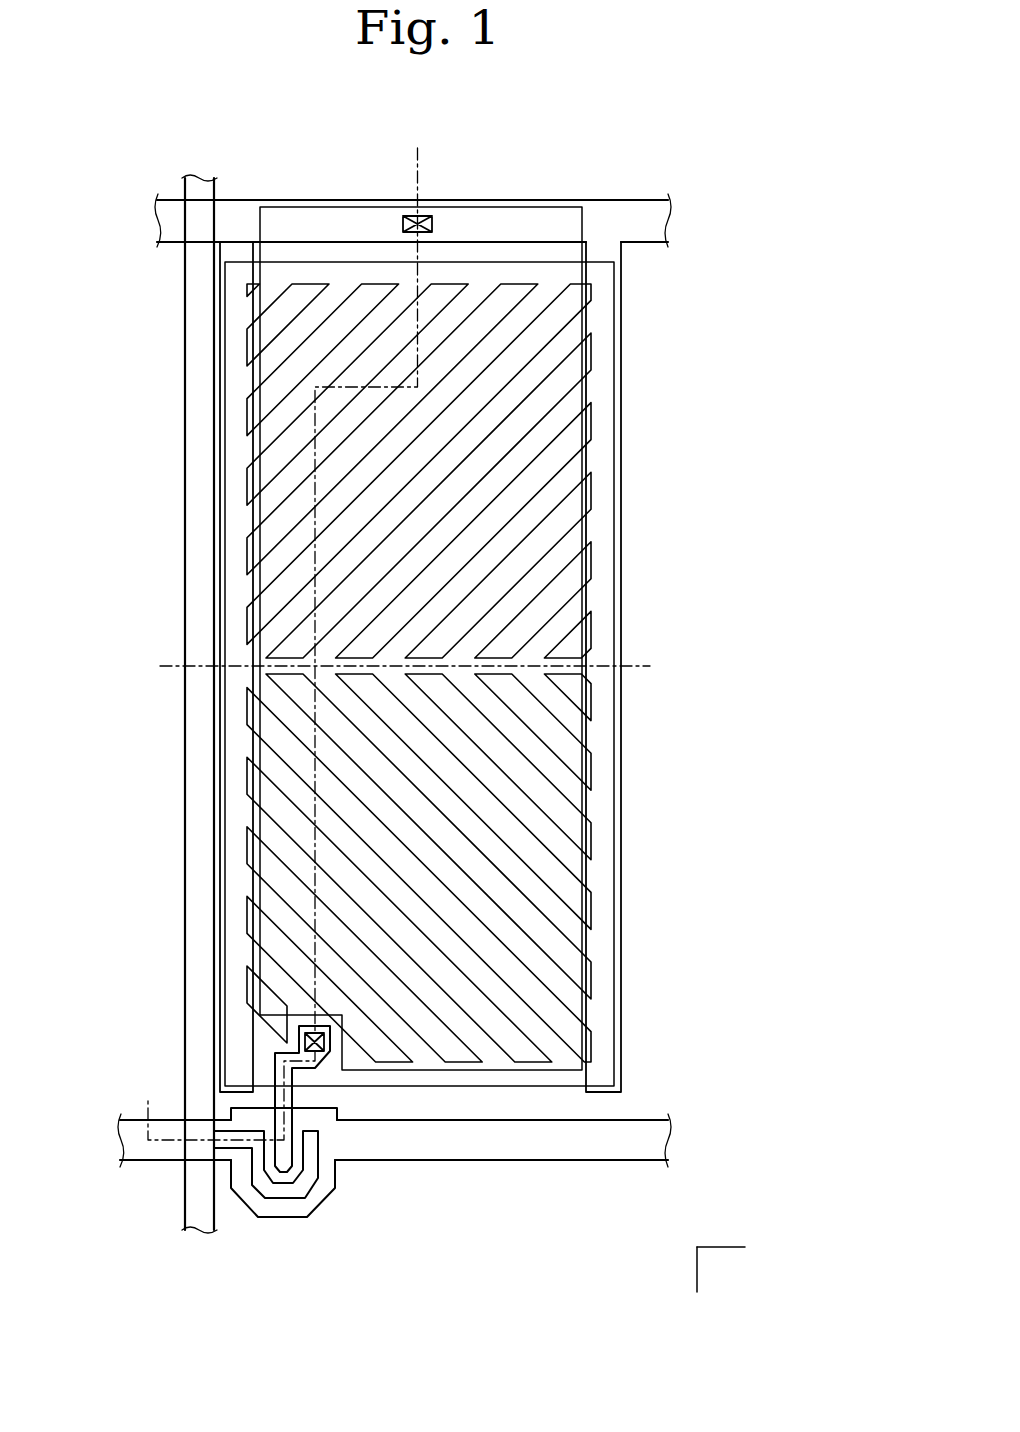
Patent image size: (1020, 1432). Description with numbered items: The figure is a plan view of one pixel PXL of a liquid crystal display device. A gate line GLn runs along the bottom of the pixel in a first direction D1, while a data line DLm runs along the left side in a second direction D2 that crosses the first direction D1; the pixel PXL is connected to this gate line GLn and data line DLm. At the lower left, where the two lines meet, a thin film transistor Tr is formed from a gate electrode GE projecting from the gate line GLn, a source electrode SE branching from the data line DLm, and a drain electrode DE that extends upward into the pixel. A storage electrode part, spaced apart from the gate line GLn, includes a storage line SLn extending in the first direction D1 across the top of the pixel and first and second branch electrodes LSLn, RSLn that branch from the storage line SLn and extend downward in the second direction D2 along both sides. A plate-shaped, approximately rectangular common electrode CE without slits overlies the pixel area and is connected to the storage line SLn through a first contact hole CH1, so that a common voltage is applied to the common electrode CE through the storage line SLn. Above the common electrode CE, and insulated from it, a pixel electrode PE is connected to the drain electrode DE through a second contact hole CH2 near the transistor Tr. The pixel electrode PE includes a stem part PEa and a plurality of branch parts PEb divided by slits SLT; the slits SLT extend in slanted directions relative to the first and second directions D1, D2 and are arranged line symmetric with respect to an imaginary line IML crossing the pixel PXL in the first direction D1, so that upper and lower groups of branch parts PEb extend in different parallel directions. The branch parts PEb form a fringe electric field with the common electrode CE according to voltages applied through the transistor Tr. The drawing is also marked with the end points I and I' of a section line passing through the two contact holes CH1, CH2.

The pixel PXL is at (567, 181).
The first contact hole CH1 is at (427, 212).
The second contact hole CH2 is at (304, 1046).
The storage line SLn is at (648, 228).
The first branch electrode LSLn is at (214, 325).
The second branch electrode RSLn is at (615, 383).
The data line DLm is at (193, 722).
The gate line GLn is at (582, 1147).
The pixel electrode PE is at (498, 673).
The stem part PEa is at (474, 828).
The branch parts PEb is at (572, 542).
The slits SLT is at (572, 810).
The imaginary line IML is at (424, 667).
The common electrode CE is at (462, 1072).
The drain electrode DE is at (258, 1172).
The source electrode SE is at (288, 1200).
The gate electrode GE is at (322, 1205).
The thin film transistor Tr is at (278, 1183).
The section line I is at (230, 1095).
The section line I' is at (371, 570).
The first direction D1 is at (753, 1247).
The second direction D2 is at (697, 1300).